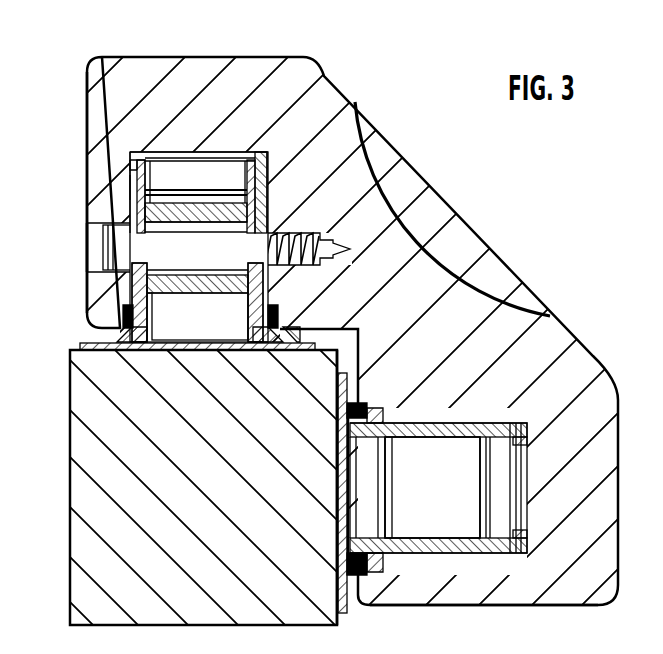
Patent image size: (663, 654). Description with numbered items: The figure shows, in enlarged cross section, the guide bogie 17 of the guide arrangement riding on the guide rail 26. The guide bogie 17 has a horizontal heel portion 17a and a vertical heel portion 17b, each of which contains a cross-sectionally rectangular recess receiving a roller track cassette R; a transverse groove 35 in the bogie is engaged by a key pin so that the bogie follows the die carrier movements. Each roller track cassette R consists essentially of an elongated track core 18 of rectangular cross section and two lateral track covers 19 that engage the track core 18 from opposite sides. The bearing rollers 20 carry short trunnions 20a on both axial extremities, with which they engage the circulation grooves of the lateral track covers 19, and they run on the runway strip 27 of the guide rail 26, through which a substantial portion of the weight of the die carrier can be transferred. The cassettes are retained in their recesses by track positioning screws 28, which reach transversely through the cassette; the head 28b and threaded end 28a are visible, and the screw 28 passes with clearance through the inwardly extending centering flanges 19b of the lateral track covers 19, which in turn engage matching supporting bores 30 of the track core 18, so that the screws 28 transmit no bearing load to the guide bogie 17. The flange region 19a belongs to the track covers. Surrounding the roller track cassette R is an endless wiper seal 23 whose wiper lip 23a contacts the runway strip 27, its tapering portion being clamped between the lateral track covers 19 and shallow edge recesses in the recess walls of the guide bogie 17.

The guide bogie 17 is at (557, 370).
The horizontal heel portion 17a is at (113, 89).
The vertical heel portion 17b is at (563, 563).
The track core 18 is at (430, 510).
The lateral track cover 19 is at (132, 288).
The sleeve flange 19a is at (143, 153).
The centering flange 19b is at (232, 192).
The bearing roller 20 is at (502, 502).
The trunnion 20a is at (148, 177).
The wiper seal 23 is at (123, 333).
The wiper lip 23a is at (113, 350).
The guide rail 26 is at (113, 518).
The runway strip 27 is at (245, 348).
The track positioning screw 28 is at (150, 250).
The screw threaded end 28a is at (333, 232).
The screw head 28b is at (105, 233).
The supporting bore 30 is at (195, 325).
The transverse groove 35 is at (500, 287).
The roller track cassette R is at (131, 186).